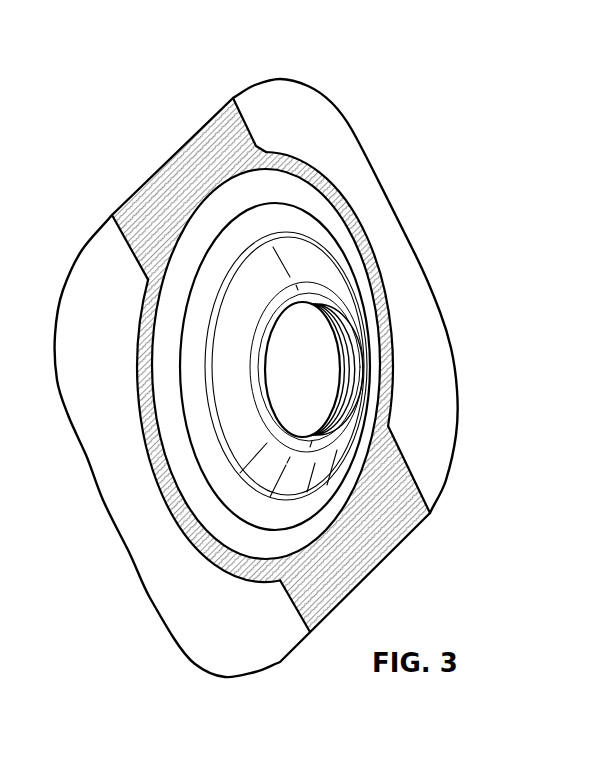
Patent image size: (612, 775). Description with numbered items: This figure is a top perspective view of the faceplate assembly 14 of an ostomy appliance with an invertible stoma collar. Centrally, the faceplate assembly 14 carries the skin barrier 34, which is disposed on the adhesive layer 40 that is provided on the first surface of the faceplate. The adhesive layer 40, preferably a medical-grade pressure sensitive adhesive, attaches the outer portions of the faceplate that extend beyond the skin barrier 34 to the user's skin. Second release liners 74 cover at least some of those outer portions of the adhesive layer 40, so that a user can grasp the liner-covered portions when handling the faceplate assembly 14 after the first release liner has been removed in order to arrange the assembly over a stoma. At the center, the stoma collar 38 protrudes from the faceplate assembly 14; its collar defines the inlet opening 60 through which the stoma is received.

The faceplate assembly 14 is at (386, 95).
The skin barrier 34 is at (325, 215).
The stoma collar 38 is at (342, 298).
The adhesive layer 40 is at (372, 557).
The inlet opening 60 is at (299, 402).
The second release liner 74 is at (327, 147).